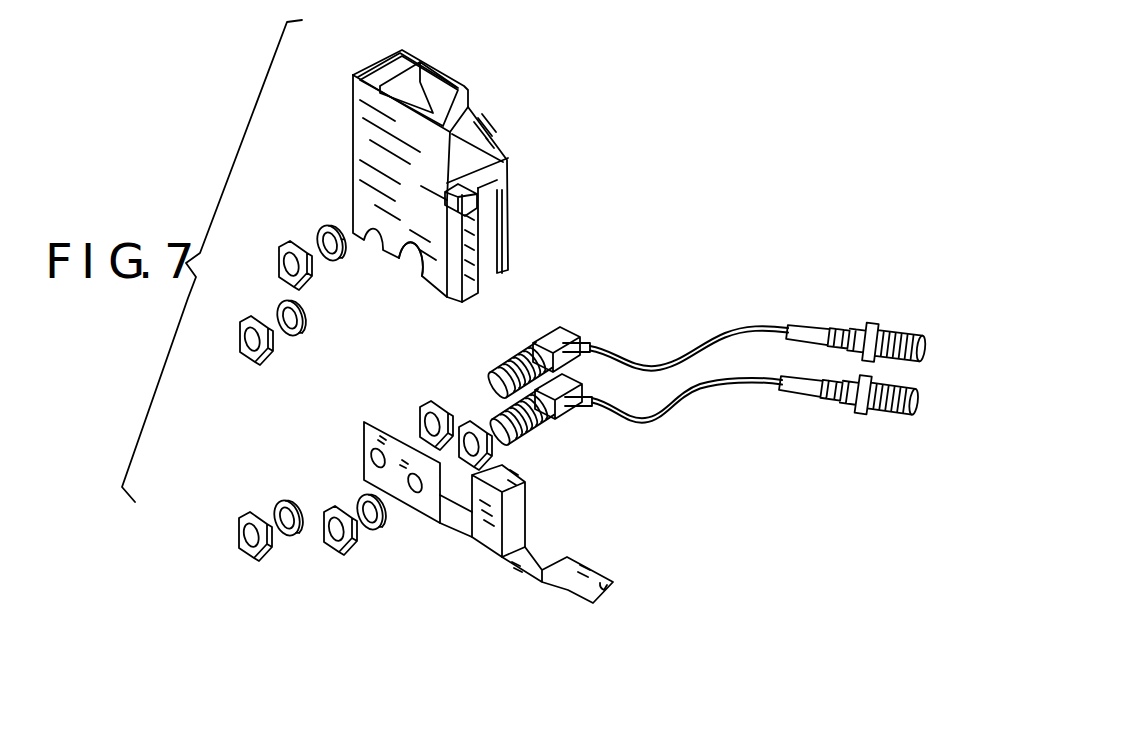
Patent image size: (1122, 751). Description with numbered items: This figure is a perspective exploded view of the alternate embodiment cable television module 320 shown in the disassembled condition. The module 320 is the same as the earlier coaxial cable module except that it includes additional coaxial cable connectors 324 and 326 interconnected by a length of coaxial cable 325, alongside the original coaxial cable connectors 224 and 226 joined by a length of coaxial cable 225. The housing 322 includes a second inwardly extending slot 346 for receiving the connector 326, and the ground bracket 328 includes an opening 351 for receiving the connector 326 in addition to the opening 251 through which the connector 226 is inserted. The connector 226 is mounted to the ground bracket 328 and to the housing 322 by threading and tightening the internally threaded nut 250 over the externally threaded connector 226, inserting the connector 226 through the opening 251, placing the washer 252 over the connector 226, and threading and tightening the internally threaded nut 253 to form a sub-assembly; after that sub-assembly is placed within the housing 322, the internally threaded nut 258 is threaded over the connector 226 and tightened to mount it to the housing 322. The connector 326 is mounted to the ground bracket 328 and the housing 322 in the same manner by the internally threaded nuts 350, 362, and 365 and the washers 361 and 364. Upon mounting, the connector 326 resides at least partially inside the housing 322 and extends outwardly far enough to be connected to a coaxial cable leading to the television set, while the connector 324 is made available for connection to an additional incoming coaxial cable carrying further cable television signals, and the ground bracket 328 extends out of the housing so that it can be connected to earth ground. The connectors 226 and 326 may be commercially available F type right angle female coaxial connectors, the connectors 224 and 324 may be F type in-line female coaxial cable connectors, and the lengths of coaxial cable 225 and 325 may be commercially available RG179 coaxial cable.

The cable television module 320 is at (508, 162).
The housing 322 is at (398, 12).
The second inwardly extending slot 346 is at (412, 262).
The opening 251 is at (327, 225).
The internally threaded nut 258 is at (295, 218).
The washer 364 is at (280, 302).
The internally threaded nut 365 is at (242, 333).
The washer 252 is at (304, 468).
The internally threaded nut 253 is at (238, 518).
The internally threaded nut 362 is at (342, 555).
The washer 361 is at (383, 535).
The internally threaded nut 250 is at (418, 408).
The internally threaded nut 350 is at (468, 432).
The ground bracket 328 is at (568, 587).
The opening 351 is at (422, 497).
The coaxial cable connector 226 is at (540, 314).
The coaxial cable connector 326 is at (537, 430).
The length of coaxial cable 225 is at (662, 362).
The length of coaxial cable 325 is at (707, 405).
The coaxial cable connector 224 is at (907, 335).
The coaxial cable connector 324 is at (893, 420).